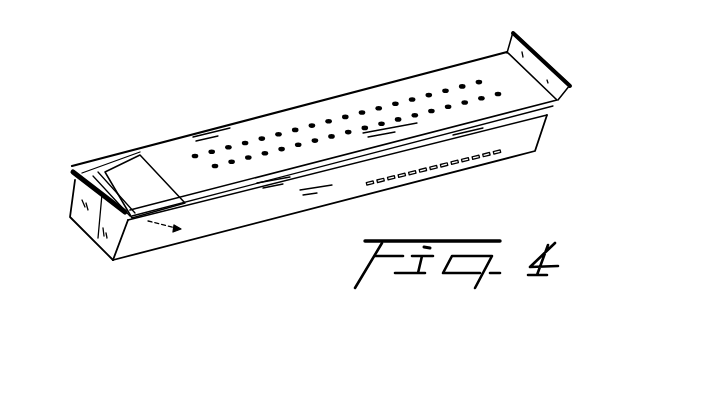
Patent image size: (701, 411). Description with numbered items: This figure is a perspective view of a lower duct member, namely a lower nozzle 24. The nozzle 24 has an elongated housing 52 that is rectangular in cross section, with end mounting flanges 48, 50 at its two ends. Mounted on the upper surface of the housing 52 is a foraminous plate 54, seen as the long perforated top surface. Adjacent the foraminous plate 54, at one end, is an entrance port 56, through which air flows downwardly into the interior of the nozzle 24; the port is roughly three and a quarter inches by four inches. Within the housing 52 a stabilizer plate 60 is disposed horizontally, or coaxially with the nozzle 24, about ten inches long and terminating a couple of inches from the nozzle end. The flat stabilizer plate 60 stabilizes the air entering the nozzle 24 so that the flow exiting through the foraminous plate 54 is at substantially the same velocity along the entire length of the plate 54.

The lower nozzle 24 is at (304, 146).
The end mounting flange 48 is at (540, 53).
The end mounting flange 50 is at (72, 168).
The housing 52 is at (234, 220).
The foraminous plate 54 is at (325, 106).
The entrance port 56 is at (146, 168).
The stabilizer plate 60 is at (478, 155).